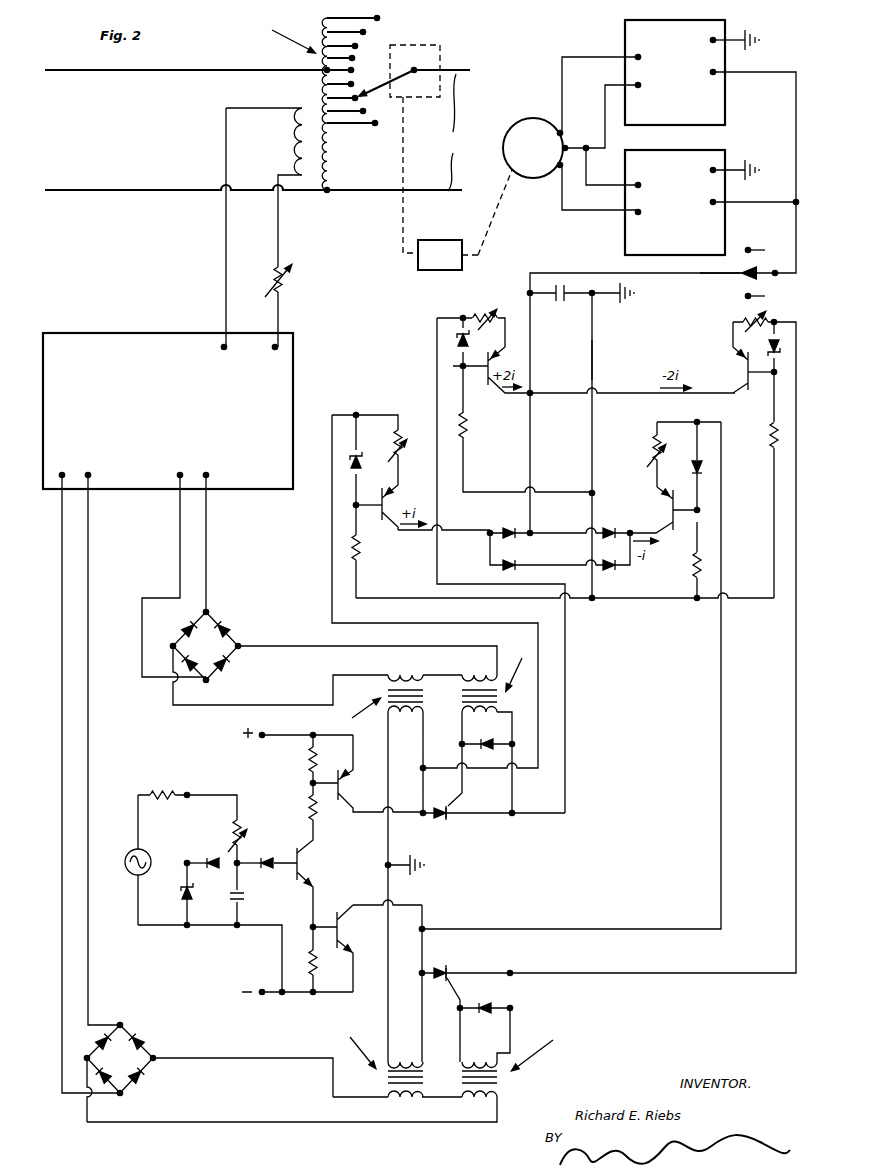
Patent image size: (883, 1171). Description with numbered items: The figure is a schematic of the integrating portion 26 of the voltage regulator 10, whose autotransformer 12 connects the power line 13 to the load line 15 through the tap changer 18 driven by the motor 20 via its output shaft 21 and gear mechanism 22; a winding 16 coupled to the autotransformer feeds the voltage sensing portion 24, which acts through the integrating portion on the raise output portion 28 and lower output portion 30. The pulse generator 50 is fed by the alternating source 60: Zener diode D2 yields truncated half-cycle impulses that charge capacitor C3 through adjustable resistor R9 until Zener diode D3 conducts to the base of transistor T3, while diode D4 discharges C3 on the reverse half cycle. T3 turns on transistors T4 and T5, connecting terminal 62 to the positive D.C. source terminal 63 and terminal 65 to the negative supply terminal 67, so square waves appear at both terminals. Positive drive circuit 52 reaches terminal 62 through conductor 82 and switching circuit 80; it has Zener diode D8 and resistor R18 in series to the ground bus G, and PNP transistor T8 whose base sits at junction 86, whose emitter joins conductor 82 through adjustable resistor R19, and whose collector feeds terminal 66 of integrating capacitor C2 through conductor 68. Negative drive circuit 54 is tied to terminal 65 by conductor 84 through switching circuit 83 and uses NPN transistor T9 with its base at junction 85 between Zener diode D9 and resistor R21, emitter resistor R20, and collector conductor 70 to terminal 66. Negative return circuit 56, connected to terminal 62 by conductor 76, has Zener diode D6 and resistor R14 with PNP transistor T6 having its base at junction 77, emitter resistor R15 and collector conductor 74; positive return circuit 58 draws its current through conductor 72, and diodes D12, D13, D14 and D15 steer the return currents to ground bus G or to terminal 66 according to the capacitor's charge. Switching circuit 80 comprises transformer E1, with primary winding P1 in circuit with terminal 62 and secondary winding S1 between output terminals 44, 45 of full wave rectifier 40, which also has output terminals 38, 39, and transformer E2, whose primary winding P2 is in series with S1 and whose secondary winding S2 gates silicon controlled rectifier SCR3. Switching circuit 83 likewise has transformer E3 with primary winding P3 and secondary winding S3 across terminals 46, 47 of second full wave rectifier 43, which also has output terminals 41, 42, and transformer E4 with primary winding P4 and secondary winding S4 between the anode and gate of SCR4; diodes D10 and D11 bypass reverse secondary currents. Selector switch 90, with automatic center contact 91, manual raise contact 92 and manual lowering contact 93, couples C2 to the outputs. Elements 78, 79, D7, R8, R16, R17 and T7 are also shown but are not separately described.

The voltage regulator 10 is at (284, 38).
The autotransformer 12 is at (328, 165).
The power line 13 is at (454, 132).
The load line 15 is at (115, 73).
The winding 16 is at (300, 124).
The tap changer 18 is at (417, 45).
The motor 20 is at (529, 118).
The output shaft 21 is at (497, 211).
The gear mechanism 22 is at (435, 241).
The voltage sensing portion 24 is at (143, 350).
The integrating portion 26 is at (660, 774).
The raise output portion 28 is at (717, 157).
The lower output portion 30 is at (717, 80).
The output terminal 38 is at (206, 474).
The output terminal 39 is at (180, 474).
The full wave rectifier 40 is at (210, 654).
The output terminal 41 is at (88, 474).
The output terminal 42 is at (62, 474).
The second full wave rectifier 43 is at (132, 1066).
The output terminal 44 is at (239, 645).
The output terminal 45 is at (171, 645).
The output terminal 46 is at (153, 1058).
The output terminal 47 is at (87, 1058).
The voltage pulse generating portion 50 is at (352, 859).
The positive drive portion 52 is at (512, 406).
The negative drive portion 54 is at (760, 453).
The negative return portion 56 is at (374, 390).
The positive return portion 58 is at (637, 481).
The alternating source 60 is at (132, 868).
The input terminal 62 is at (422, 817).
The positive D.C. source terminal 63 is at (262, 737).
The input terminal 65 is at (420, 970).
The terminal 66 is at (528, 292).
The negative supply terminal 67 is at (262, 995).
The conductor 68 is at (530, 396).
The conductor 70 is at (609, 393).
The conductor 72 is at (656, 533).
The conductor 74 is at (421, 535).
The conductor 76 is at (332, 512).
The junction point 77 is at (352, 505).
The conductor 78 is at (723, 536).
The junction 79 is at (699, 510).
The switching circuit 80 is at (494, 804).
The conductor 82 is at (436, 363).
The second switching circuit 83 is at (494, 998).
The conductor 84 is at (793, 638).
The junction 85 is at (775, 377).
The junction point 86 is at (455, 367).
The selector switch 90 is at (757, 276).
The center contact 91 is at (740, 274).
The manual raise contact 92 is at (747, 248).
The manual lowering contact 93 is at (755, 295).
The integrating capacitor C2 is at (561, 303).
The capacitor C3 is at (247, 900).
The Zener diode D2 is at (180, 895).
The Zener diode D3 is at (273, 853).
The diode D4 is at (210, 857).
The Zener diode D6 is at (351, 455).
The diode D7 is at (705, 468).
The Zener diode D8 is at (457, 340).
The Zener diode D9 is at (781, 323).
The diode D10 is at (486, 742).
The diode D11 is at (471, 1022).
The diode D12 is at (512, 528).
The diode D13 is at (508, 572).
The diode D14 is at (612, 527).
The diode D15 is at (608, 574).
The resistor R8 is at (157, 787).
The adjustable resistor R9 is at (248, 817).
The resistor R14 is at (358, 556).
The adjustable resistor R15 is at (401, 424).
The resistor R16 is at (695, 558).
The variable resistor R17 is at (653, 441).
The resistor R18 is at (466, 437).
The adjustable resistor R19 is at (473, 315).
The adjustable resistor R20 is at (744, 320).
The resistor R21 is at (771, 427).
The transistor T3 is at (310, 868).
The transistor T4 is at (342, 788).
The transistor T5 is at (340, 933).
The transistor T6 is at (387, 498).
The transistor T7 is at (672, 506).
The transistor T8 is at (508, 369).
The transistor T9 is at (740, 371).
The silicon controlled rectifier SCR3 is at (444, 820).
The silicon controlled rectifier SCR4 is at (440, 964).
The first transformer E1 is at (376, 710).
The second transformer E2 is at (494, 672).
The first transformer E3 is at (375, 1055).
The second transformer E4 is at (516, 1054).
The secondary winding S1 is at (407, 682).
The secondary winding S2 is at (458, 710).
The secondary winding S3 is at (400, 1090).
The secondary winding S4 is at (460, 1060).
The primary winding P1 is at (407, 715).
The primary winding P2 is at (483, 682).
The primary winding P3 is at (402, 1057).
The primary winding P4 is at (480, 1090).
The ground bus G is at (596, 364).